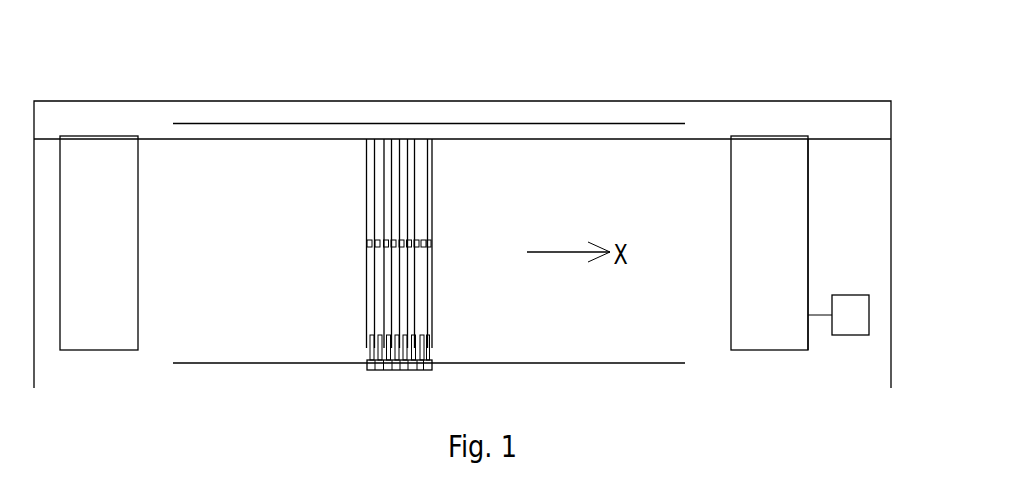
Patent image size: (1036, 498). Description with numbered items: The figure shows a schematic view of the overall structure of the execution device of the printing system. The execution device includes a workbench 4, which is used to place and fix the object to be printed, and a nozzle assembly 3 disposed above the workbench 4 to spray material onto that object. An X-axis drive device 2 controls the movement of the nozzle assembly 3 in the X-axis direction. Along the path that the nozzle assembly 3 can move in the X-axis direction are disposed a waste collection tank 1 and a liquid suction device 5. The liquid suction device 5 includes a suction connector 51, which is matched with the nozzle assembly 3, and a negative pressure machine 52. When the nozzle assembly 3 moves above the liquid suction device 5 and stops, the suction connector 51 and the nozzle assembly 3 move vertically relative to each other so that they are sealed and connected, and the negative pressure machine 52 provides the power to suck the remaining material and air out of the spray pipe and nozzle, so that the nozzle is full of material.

The waste collection tank 1 is at (152, 181).
The X-axis drive device 2 is at (429, 188).
The nozzle assembly 3 is at (439, 191).
The workbench 4 is at (462, 200).
The liquid suction device 5 is at (788, 181).
The suction connector 51 is at (858, 203).
The negative pressure machine 52 is at (878, 236).